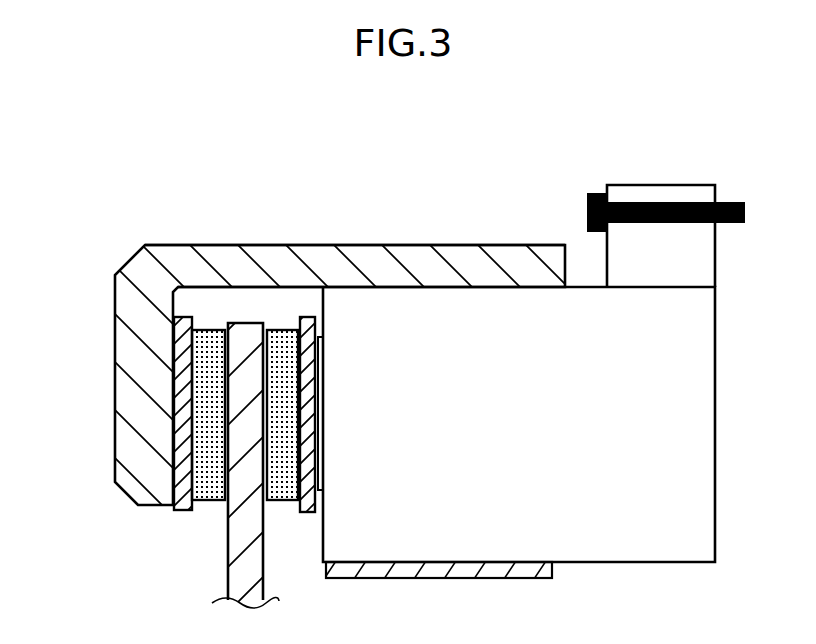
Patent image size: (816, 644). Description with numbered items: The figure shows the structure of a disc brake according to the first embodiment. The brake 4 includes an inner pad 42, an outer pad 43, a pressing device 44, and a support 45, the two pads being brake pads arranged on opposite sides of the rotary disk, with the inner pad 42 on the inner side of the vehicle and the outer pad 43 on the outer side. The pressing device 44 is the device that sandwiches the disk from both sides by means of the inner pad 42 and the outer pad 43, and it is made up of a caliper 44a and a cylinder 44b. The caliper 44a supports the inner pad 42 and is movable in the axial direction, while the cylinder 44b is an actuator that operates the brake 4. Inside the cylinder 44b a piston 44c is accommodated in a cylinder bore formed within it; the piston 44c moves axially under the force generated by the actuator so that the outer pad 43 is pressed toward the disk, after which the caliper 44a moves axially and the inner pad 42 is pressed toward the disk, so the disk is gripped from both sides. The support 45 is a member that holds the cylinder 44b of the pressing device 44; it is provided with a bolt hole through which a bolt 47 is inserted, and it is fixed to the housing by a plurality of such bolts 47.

The brake 4 is at (192, 199).
The inner pad 42 is at (210, 488).
The outer pad 43 is at (282, 488).
The pressing device 44 is at (102, 327).
The caliper 44a is at (260, 245).
The cylinder 44b is at (594, 312).
The piston 44c is at (320, 337).
The support 45 is at (700, 256).
The bolt 47 is at (587, 210).